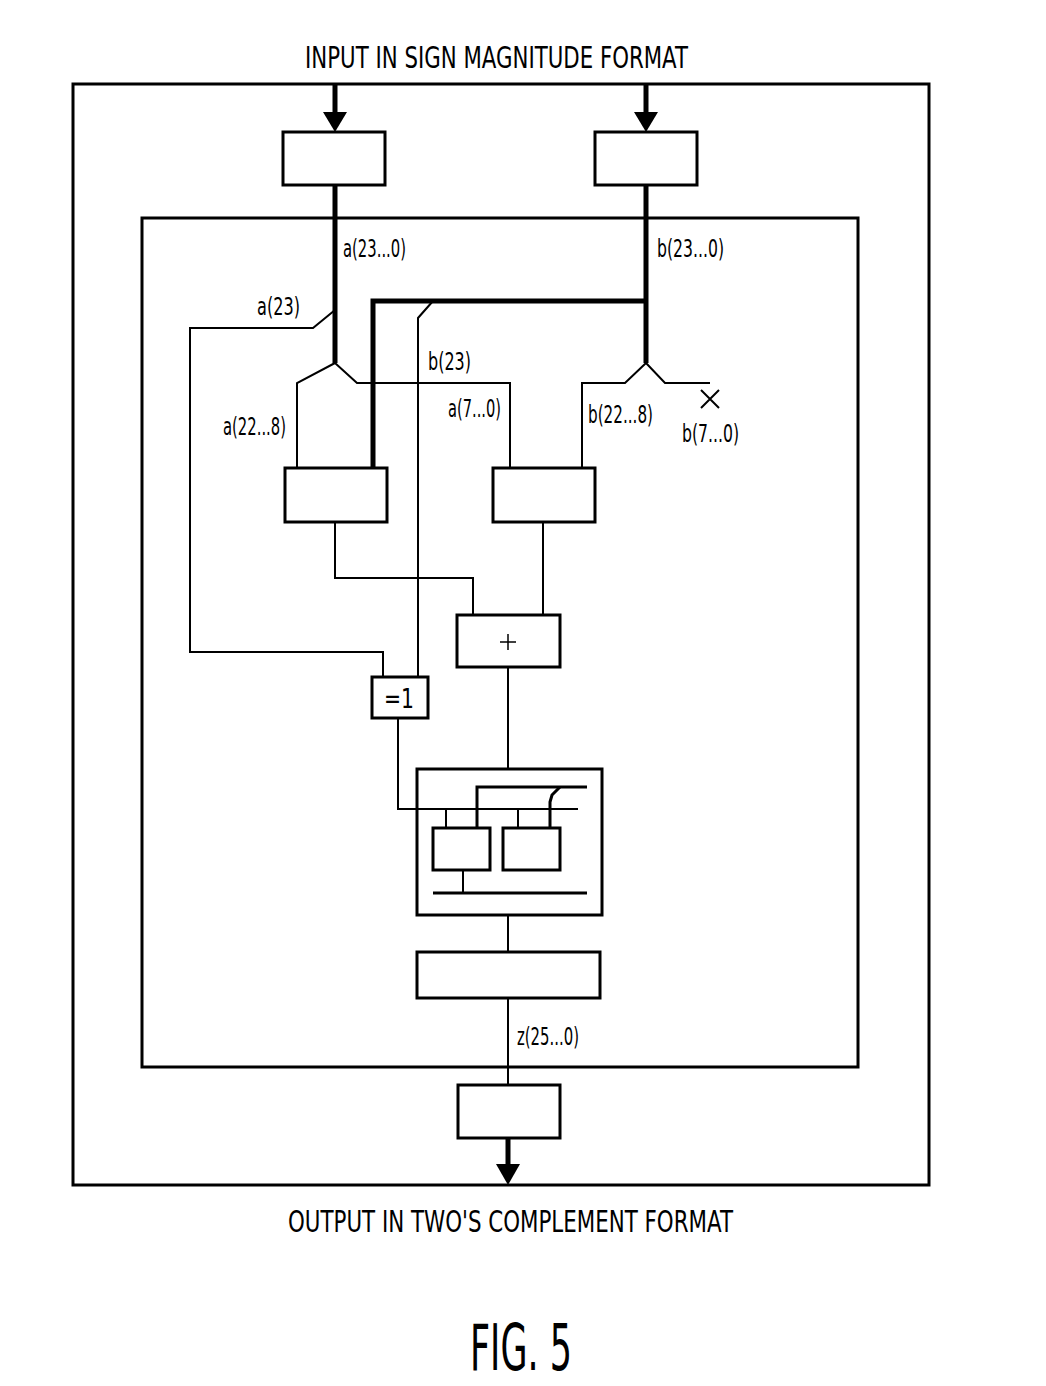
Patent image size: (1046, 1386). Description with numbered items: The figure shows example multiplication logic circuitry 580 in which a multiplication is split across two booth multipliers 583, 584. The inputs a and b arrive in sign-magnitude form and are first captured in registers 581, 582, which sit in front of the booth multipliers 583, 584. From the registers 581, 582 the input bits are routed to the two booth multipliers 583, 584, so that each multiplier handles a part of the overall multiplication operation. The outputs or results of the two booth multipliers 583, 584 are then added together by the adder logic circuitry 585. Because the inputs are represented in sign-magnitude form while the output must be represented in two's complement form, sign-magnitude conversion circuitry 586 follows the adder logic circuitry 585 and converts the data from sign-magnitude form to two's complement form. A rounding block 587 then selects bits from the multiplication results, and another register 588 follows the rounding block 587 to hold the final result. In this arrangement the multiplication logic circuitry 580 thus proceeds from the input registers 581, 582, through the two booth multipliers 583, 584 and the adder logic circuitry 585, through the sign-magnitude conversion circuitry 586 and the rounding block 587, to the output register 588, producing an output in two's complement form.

The multiplication logic circuitry 580 is at (872, 84).
The register 581 is at (385, 158).
The register 582 is at (697, 158).
The booth multiplier 583 is at (298, 522).
The booth multiplier 584 is at (595, 495).
The adder logic circuitry 585 is at (560, 633).
The SM conversion circuitry 586 is at (417, 873).
The rounding block 587 is at (417, 973).
The register 588 is at (458, 1115).